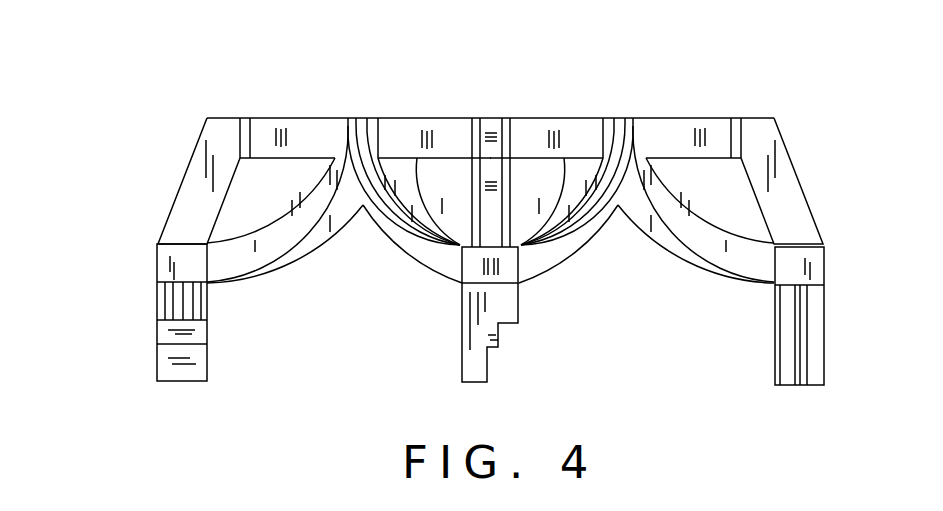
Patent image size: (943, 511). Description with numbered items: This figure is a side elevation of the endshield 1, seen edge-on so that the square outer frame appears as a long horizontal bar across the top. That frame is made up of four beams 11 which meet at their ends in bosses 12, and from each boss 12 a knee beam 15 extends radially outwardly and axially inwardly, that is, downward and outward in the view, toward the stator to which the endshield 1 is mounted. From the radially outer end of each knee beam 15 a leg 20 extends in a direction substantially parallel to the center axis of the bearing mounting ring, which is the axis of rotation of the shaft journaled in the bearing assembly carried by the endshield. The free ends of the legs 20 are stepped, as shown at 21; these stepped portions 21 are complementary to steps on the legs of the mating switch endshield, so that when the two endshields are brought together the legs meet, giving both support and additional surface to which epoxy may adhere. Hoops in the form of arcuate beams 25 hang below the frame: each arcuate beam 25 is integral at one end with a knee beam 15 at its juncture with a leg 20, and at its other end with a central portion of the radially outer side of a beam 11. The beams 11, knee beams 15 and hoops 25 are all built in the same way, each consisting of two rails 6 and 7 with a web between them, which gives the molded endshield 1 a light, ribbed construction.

The endshield 1 is at (554, 88).
The rail 6 is at (292, 230).
The rail 7 is at (398, 187).
The beam 11 is at (314, 128).
The boss 12 is at (223, 118).
The knee beam 15 is at (183, 163).
The leg 20 is at (154, 322).
The stepped portion 21 is at (183, 358).
The arcuate beam 25 is at (264, 271).